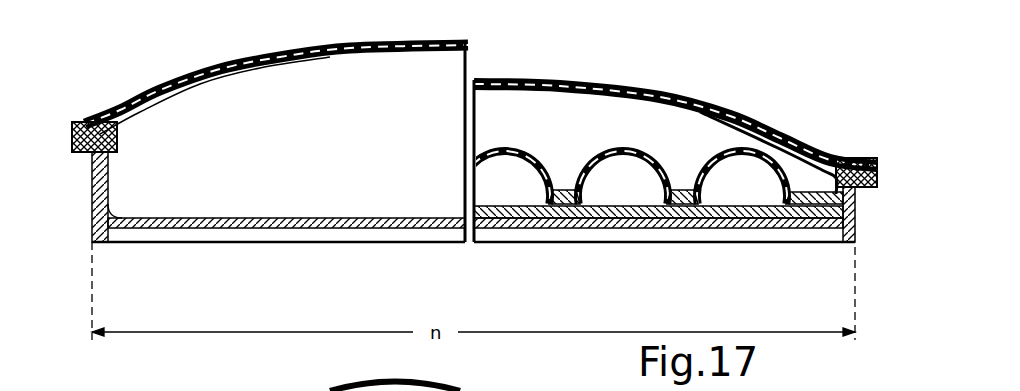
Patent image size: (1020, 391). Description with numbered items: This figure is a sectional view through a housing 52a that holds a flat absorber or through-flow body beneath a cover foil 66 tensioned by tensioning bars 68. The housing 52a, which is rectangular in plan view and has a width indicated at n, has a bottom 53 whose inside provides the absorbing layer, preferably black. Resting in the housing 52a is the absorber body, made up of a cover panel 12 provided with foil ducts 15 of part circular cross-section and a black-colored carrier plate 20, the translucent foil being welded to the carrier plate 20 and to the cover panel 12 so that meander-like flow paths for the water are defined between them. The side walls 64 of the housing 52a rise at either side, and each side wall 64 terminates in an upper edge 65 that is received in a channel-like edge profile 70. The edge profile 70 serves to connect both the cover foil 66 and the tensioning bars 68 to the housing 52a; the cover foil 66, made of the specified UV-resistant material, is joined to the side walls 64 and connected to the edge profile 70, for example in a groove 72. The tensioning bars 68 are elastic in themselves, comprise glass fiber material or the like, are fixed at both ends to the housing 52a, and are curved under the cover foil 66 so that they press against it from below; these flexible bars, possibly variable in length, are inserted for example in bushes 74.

The cover panel 12 is at (681, 190).
The foil ducts 15 is at (623, 150).
The carrier plate 20 is at (800, 232).
The housing 52a is at (80, 165).
The bottom 53 is at (394, 235).
The side walls 64 is at (108, 176).
The upper edge 65 is at (105, 156).
The cover foil 66 is at (587, 79).
The tensioning bars 68 is at (528, 78).
The edge profile 70 is at (870, 158).
The groove 72 is at (835, 163).
The bushes 74 is at (118, 124).